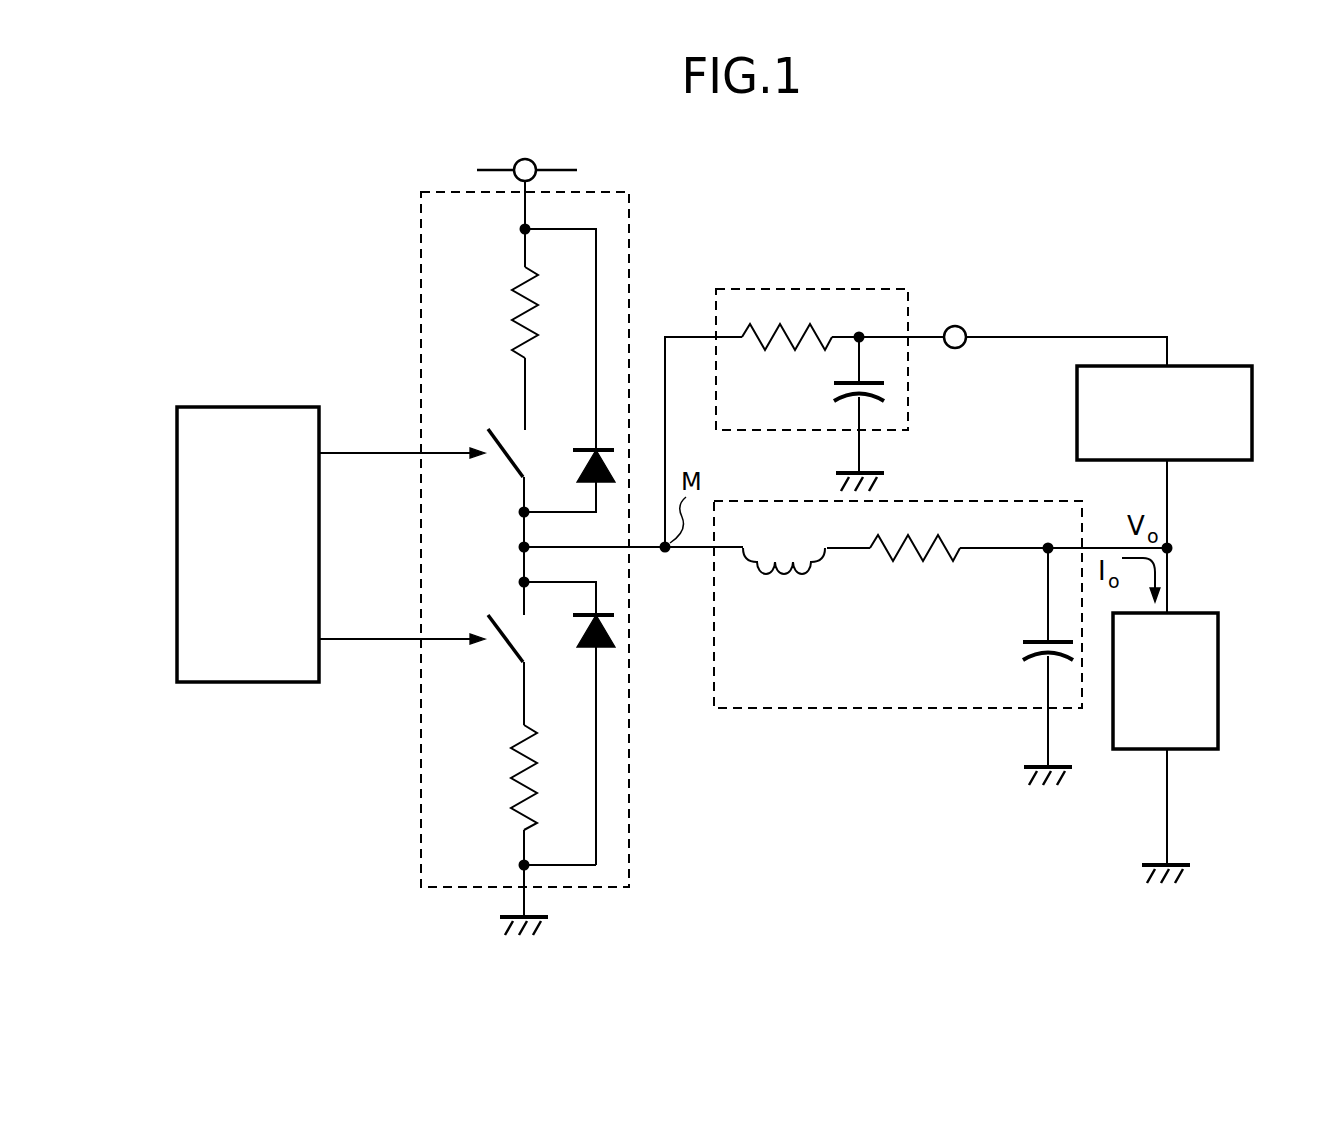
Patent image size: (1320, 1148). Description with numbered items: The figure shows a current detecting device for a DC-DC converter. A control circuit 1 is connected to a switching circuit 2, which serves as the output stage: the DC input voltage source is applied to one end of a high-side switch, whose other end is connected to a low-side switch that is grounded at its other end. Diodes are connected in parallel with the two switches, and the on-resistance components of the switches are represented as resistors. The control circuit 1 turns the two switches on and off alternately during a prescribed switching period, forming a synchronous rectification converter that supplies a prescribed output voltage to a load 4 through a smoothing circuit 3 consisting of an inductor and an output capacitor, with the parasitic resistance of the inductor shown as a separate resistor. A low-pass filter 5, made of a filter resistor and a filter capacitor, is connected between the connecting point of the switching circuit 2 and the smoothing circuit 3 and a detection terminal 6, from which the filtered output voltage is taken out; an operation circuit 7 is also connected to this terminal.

The control circuit 1 is at (242, 405).
The switching circuit 2 is at (630, 218).
The smoothing circuit 3 is at (802, 710).
The load 4 is at (1193, 612).
The low-pass filter 5 is at (815, 288).
The detection terminal 6 is at (952, 325).
The operation circuit 7 is at (1205, 366).